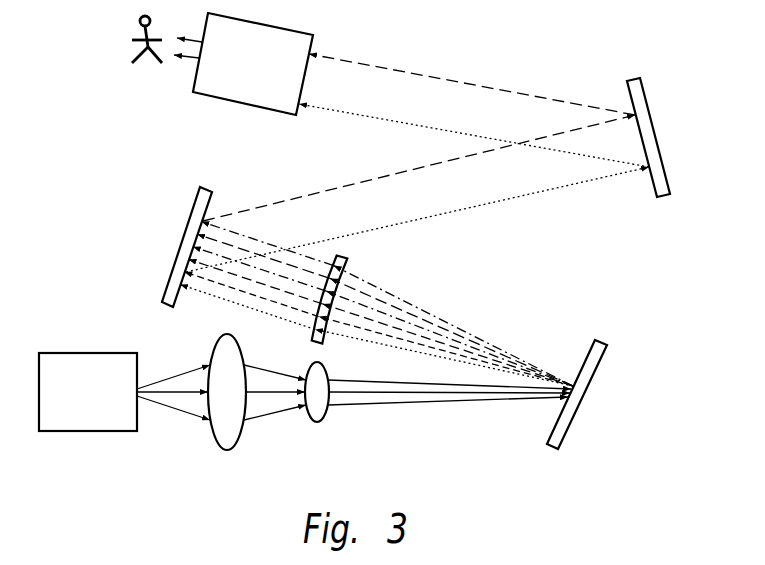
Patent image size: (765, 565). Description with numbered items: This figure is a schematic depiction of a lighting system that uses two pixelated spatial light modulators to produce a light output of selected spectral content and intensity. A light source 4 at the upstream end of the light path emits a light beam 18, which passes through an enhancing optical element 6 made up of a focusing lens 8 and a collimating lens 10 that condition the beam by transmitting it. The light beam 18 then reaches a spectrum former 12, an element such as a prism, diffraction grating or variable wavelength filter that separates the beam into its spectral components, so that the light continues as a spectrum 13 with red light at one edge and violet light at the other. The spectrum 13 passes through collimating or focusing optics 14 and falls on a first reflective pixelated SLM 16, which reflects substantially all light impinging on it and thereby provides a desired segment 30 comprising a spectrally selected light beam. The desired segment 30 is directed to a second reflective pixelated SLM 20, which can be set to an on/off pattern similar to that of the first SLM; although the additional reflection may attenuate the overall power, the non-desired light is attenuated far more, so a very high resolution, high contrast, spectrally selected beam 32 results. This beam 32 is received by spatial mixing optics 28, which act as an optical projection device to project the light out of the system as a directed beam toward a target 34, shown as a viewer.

The light source 4 is at (75, 353).
The enhancing optical element 6 is at (265, 431).
The focusing lens 8 is at (220, 442).
The collimating lens 10 is at (322, 421).
The spectrum former 12 is at (600, 370).
The spectrum 13 is at (487, 348).
The collimating or focusing optics 14 is at (348, 258).
The reflective pixelated SLM 16 is at (178, 241).
The light beam 18 is at (263, 372).
The second reflective pixelated SLM 20 is at (662, 198).
The spatial mixing optics 28 is at (247, 105).
The desired segment 30 is at (480, 203).
The spectrally selected beam 32 is at (487, 85).
The target 34 is at (140, 78).